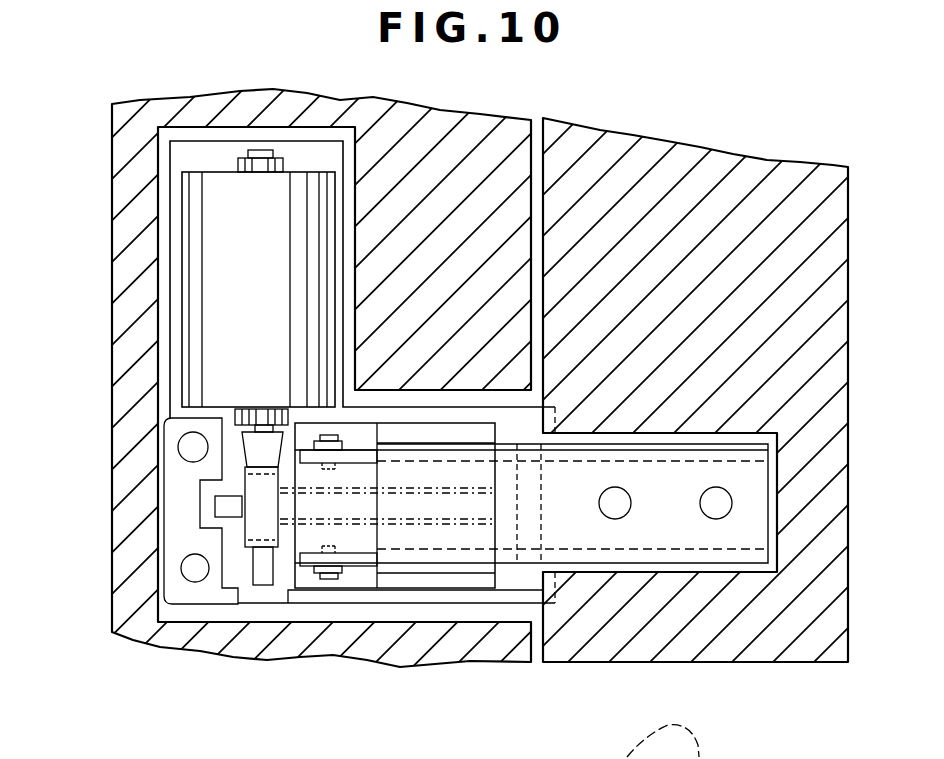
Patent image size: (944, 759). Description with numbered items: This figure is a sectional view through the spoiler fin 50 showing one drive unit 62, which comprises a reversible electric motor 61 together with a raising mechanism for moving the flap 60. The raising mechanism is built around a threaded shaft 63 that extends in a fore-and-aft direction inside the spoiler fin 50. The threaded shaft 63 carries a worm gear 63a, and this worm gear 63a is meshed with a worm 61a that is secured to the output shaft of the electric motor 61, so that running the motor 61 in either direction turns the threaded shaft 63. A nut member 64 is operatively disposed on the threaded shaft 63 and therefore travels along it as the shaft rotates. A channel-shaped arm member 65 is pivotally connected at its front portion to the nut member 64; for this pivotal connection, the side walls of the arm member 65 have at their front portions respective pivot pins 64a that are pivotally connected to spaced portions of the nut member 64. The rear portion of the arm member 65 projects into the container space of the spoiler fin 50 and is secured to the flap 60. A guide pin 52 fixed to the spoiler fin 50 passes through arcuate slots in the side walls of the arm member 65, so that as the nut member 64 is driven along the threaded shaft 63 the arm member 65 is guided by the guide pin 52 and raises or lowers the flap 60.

The spoiler fin 50 is at (118, 103).
The flap 60 is at (712, 160).
The reversible electric motor 61 is at (272, 294).
The worm 61a is at (260, 535).
The drive unit 62 is at (330, 592).
The threaded shaft 63 is at (290, 512).
The worm gear 63a is at (203, 530).
The nut member 64 is at (363, 548).
The pivot pins 64a is at (327, 433).
The channel-shaped arm member 65 is at (460, 558).
The guide pin 52 is at (530, 567).